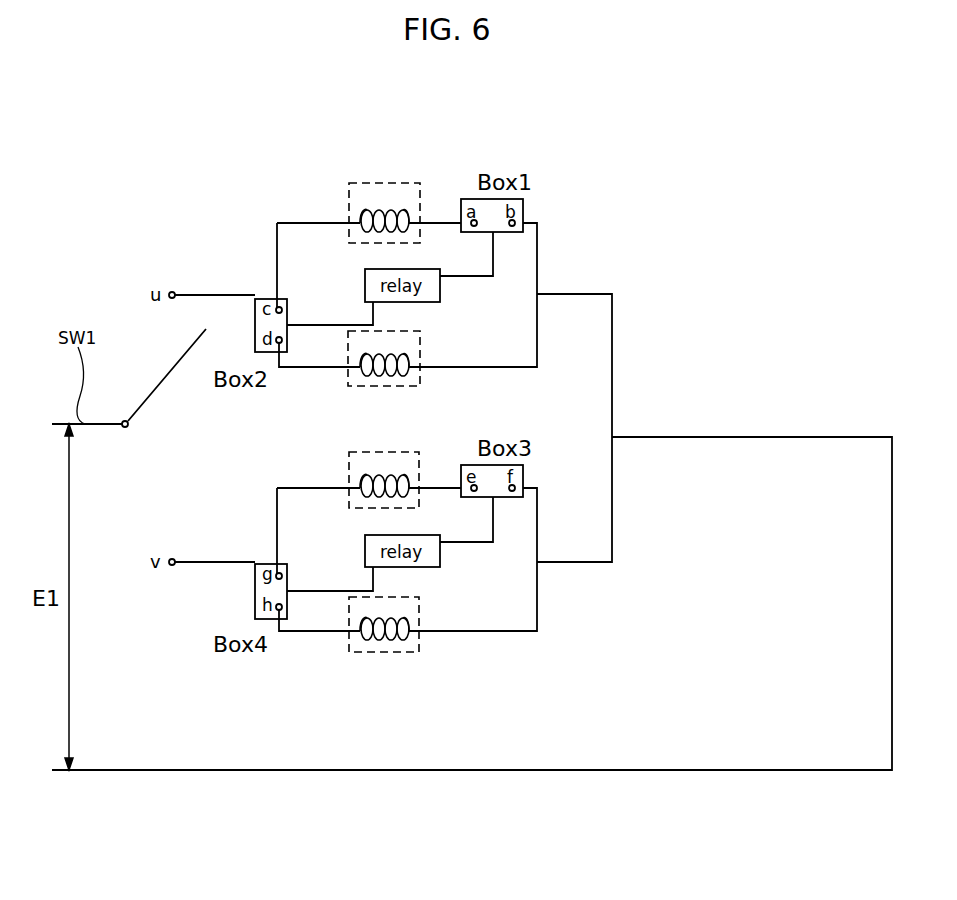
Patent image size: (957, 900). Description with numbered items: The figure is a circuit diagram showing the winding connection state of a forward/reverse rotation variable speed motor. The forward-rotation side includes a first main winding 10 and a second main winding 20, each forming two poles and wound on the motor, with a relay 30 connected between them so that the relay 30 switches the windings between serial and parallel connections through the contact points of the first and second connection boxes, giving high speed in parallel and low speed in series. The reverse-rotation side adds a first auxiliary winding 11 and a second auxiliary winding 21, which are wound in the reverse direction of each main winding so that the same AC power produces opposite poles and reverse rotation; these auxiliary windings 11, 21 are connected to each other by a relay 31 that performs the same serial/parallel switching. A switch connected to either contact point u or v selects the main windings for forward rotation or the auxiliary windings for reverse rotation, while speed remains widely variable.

The first main winding 10 is at (390, 183).
The second main winding 20 is at (420, 372).
The relay 30 is at (440, 283).
The first auxiliary winding 11 is at (389, 452).
The second auxiliary winding 21 is at (420, 636).
The relay 31 is at (440, 548).